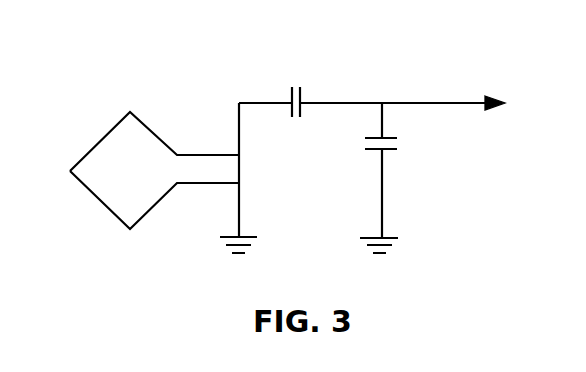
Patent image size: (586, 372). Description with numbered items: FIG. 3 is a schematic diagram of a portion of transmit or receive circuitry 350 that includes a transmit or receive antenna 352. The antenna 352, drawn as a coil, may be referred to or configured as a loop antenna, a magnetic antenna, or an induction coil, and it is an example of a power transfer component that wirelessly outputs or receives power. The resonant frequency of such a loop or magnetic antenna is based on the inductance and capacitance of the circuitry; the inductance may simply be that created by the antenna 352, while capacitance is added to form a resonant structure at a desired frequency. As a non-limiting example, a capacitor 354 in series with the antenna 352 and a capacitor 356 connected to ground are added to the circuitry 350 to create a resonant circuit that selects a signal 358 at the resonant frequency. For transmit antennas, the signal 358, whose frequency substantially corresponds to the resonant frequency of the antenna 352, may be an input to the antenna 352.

The transmit or receive circuitry 350 is at (153, 78).
The antenna 352 is at (100, 138).
The capacitor 354 is at (304, 91).
The capacitor 356 is at (390, 152).
The signal 358 is at (418, 102).